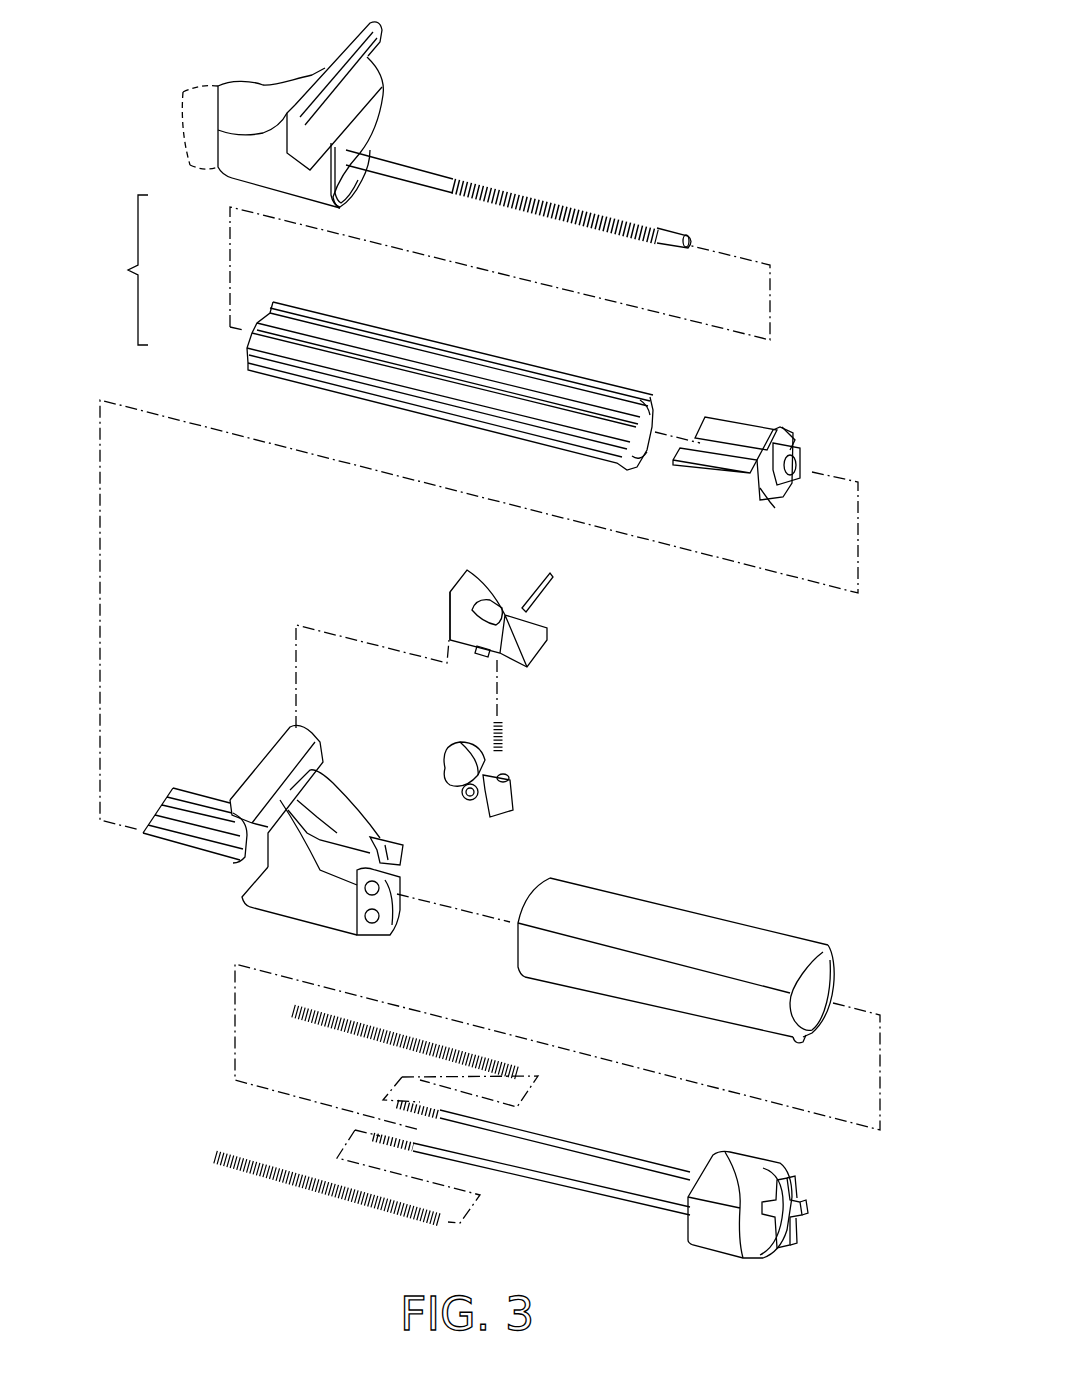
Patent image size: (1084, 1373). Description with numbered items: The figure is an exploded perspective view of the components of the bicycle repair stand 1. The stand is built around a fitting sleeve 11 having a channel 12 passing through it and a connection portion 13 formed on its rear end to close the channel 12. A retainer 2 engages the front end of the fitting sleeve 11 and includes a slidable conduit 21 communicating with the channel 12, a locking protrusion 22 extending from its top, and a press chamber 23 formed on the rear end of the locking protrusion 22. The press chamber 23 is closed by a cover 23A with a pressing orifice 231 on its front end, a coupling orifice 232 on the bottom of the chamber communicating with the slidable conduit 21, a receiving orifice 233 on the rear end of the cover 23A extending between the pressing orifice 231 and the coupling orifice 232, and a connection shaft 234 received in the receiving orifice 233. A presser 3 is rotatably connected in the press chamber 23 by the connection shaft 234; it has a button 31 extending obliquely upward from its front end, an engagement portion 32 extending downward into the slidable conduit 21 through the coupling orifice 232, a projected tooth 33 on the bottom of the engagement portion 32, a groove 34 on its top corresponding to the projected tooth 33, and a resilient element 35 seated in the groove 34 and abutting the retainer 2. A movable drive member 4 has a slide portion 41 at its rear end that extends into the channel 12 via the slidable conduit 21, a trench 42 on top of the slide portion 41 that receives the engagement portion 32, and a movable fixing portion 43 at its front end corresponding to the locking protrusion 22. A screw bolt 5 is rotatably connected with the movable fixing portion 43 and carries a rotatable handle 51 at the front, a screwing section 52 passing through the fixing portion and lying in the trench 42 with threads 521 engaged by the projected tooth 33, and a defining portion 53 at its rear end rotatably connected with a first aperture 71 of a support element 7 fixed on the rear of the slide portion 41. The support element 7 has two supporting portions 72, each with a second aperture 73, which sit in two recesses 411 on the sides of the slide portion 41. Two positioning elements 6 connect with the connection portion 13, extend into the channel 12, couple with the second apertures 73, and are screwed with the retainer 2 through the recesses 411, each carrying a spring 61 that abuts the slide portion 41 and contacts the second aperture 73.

The bicycle repair stand 1 is at (750, 215).
The retainer 2 is at (294, 850).
The slidable conduit 21 is at (390, 903).
The locking protrusion 22 is at (247, 790).
The press chamber 23 is at (320, 817).
The cover 23A is at (486, 614).
The pressing orifice 231 is at (482, 610).
The coupling orifice 232 is at (370, 833).
The receiving orifice 233 is at (483, 653).
The connection shaft 234 is at (545, 590).
The presser 3 is at (510, 788).
The button 31 is at (455, 750).
The engagement portion 32 is at (513, 800).
The projected tooth 33 is at (497, 817).
The groove 34 is at (508, 776).
The resilient element 35 is at (505, 730).
The movable drive member 4 is at (123, 270).
The slide portion 41 is at (422, 389).
The trench 42 is at (468, 367).
The recess 411 is at (653, 407).
The movable fixing portion 43 is at (250, 185).
The screw bolt 5 is at (537, 164).
The rotatable handle 51 is at (228, 85).
The screwing section 52 is at (570, 179).
The threads 521 is at (585, 215).
The defining portion 53 is at (675, 245).
The positioning element 6 is at (620, 1157).
The spring 61 is at (340, 1037).
The support element 7 is at (767, 448).
The first aperture 71 is at (800, 463).
The supporting portion 72 is at (740, 430).
The second aperture 73 is at (792, 443).
The fitting sleeve 11 is at (712, 920).
The channel 12 is at (815, 1000).
The connection portion 13 is at (797, 1223).